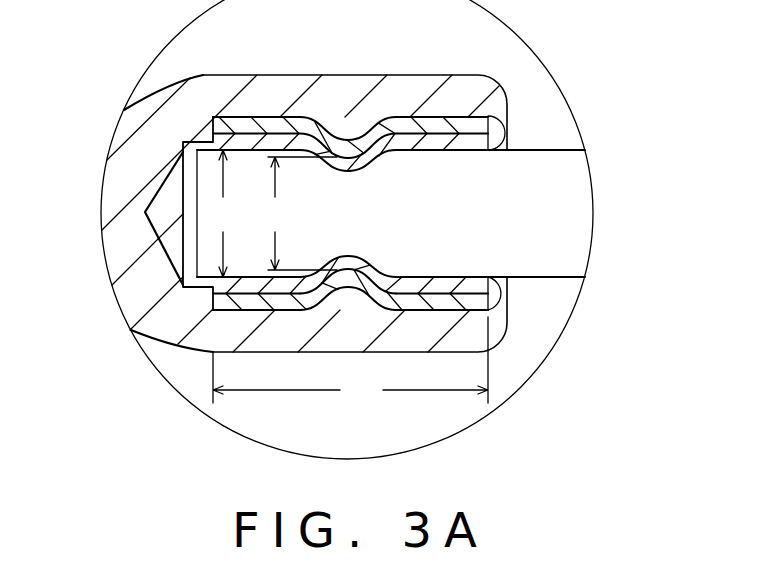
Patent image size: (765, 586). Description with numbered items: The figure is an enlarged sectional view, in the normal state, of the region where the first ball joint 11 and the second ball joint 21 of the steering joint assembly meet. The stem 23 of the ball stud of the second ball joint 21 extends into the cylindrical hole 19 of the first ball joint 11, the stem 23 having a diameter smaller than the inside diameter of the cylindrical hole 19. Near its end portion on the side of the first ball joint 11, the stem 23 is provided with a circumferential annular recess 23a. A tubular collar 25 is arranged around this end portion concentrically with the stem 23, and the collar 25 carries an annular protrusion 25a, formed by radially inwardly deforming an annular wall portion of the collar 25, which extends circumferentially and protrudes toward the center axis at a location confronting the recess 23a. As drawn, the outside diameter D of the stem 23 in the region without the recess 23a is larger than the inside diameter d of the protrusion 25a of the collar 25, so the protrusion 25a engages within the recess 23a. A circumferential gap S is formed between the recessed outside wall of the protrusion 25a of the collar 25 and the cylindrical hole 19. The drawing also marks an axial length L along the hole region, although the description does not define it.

The first ball joint 11 is at (150, 97).
The cylindrical hole 19 is at (407, 83).
The second ball joint 21 is at (553, 148).
The stem 23 is at (575, 225).
The annular recess 23a is at (372, 163).
The tubular collar 25 is at (270, 120).
The annular protrusion 25a is at (363, 253).
The circumferential gap S is at (343, 118).
The outside diameter of the stem D is at (224, 213).
The inside diameter of the protrusion d is at (302, 213).
The length L is at (350, 365).